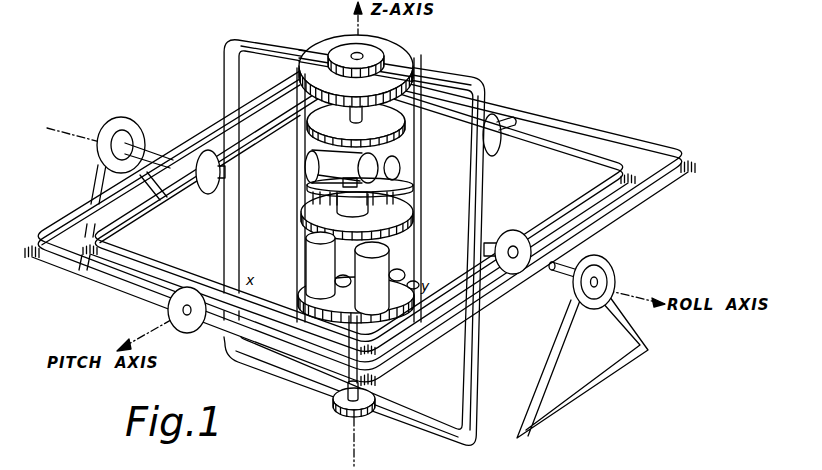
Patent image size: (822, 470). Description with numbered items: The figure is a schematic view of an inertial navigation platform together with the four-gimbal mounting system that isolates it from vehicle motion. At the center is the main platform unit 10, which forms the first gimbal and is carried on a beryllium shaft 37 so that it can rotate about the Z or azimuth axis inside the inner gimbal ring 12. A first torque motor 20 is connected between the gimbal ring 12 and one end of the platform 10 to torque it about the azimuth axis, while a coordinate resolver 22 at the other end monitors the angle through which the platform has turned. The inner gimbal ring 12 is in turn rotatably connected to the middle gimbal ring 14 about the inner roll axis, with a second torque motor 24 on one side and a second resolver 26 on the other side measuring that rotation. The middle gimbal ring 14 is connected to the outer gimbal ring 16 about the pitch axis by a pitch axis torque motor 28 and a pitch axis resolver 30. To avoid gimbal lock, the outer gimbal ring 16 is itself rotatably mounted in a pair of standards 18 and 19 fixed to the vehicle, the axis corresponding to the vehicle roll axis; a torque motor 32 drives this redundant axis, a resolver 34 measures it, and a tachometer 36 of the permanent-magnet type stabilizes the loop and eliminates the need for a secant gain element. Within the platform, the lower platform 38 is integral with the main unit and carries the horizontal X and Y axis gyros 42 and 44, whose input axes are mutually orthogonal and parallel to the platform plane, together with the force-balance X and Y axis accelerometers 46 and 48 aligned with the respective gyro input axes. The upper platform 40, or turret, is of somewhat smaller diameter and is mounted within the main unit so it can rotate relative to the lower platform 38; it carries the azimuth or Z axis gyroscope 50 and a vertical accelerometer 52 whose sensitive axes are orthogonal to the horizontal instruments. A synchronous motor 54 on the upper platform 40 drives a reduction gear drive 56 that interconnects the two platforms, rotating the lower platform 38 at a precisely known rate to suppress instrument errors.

The inertial instrument platform 10 is at (361, 205).
The inner gimbal ring 12 is at (435, 81).
The middle gimbal ring 14 is at (592, 214).
The outer gimbal ring 16 is at (622, 146).
The standard 18 is at (583, 400).
The standard 19 is at (98, 185).
The first torque motor 20 is at (372, 65).
The coordinate resolver 22 is at (355, 423).
The second torque motor 24 is at (520, 243).
The second resolver 26 is at (210, 193).
The pitch axis torque motor 28 is at (190, 327).
The pitch axis resolver 30 is at (490, 158).
The torque motor 32 is at (602, 272).
The resolver 34 is at (135, 134).
The tachometer 36 is at (608, 278).
The beryllium shaft 37 is at (362, 398).
The lower platform 38 is at (412, 285).
The upper platform 40 is at (395, 186).
The X axis gyro 42 is at (318, 259).
The Y axis gyro 44 is at (383, 247).
The X axis accelerometer 46 is at (336, 283).
The Y axis accelerometer 48 is at (404, 272).
The Z axis gyroscope 50 is at (325, 163).
The vertical accelerometer 52 is at (400, 166).
The synchronous motor 54 is at (343, 184).
The reduction gear drive 56 is at (345, 214).